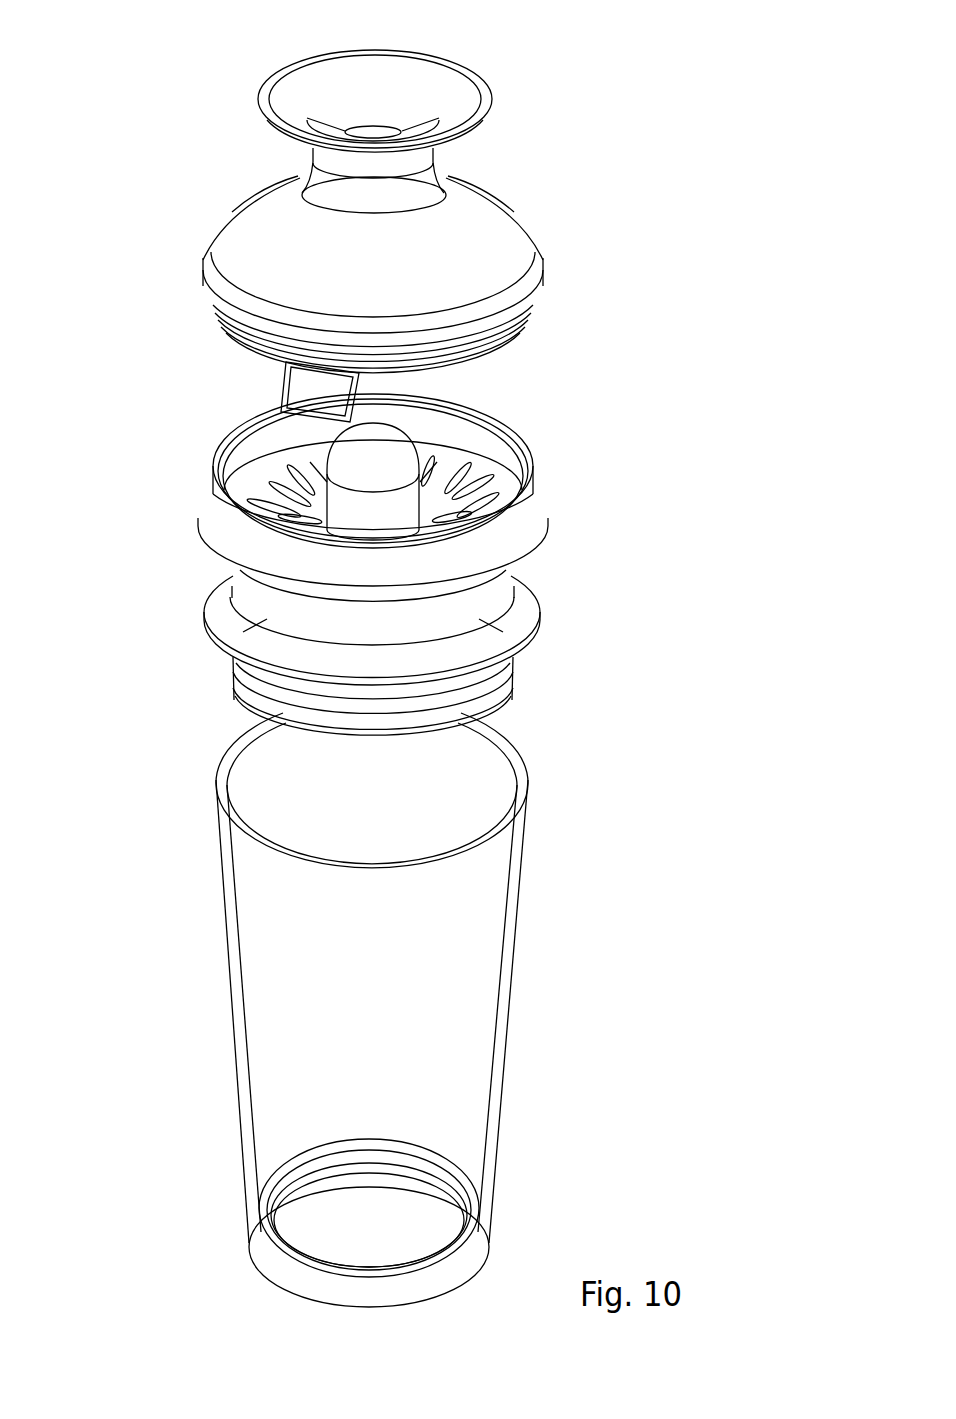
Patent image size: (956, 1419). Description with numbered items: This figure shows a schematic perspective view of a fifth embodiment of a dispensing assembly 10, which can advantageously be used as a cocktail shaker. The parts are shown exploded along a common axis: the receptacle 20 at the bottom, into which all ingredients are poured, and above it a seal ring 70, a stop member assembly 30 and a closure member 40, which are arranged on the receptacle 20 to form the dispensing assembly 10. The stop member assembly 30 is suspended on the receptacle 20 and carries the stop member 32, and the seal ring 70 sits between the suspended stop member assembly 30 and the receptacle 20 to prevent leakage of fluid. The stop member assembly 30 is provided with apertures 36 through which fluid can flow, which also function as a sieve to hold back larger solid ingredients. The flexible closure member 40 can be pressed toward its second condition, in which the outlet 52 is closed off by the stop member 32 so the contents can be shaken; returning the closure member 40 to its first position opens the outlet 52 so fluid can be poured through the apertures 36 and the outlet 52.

The dispensing assembly 10 is at (630, 255).
The receptacle 20 is at (540, 923).
The stop member assembly 30 is at (552, 537).
The stop member 32 is at (395, 507).
The apertures 36 is at (303, 512).
The closure member 40 is at (483, 230).
The outlet 52 is at (373, 93).
The seal ring 70 is at (540, 652).